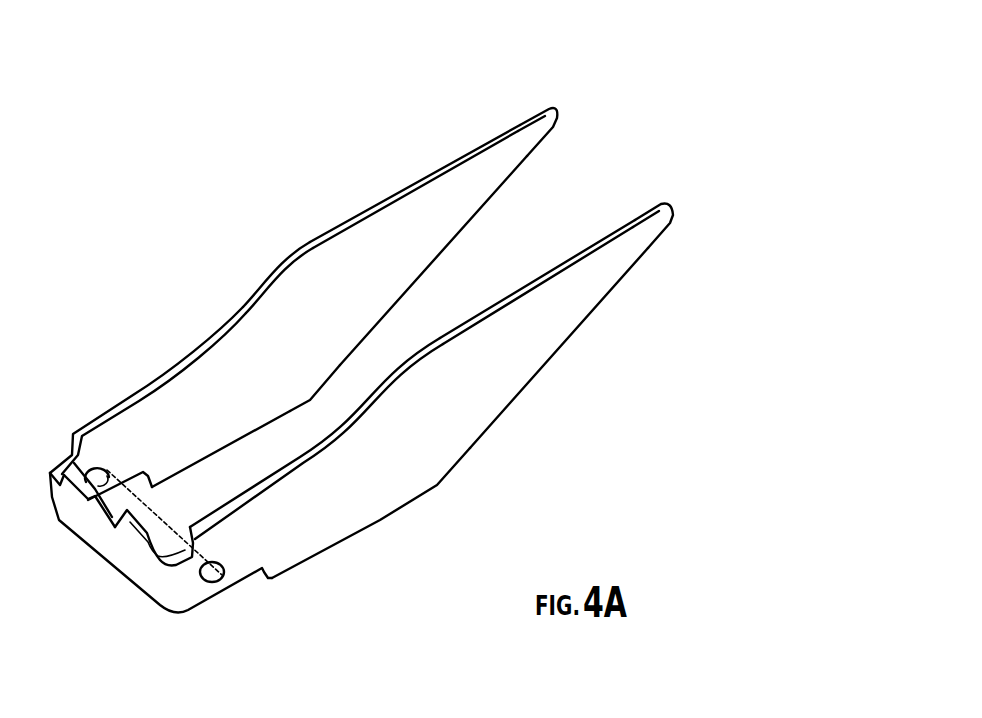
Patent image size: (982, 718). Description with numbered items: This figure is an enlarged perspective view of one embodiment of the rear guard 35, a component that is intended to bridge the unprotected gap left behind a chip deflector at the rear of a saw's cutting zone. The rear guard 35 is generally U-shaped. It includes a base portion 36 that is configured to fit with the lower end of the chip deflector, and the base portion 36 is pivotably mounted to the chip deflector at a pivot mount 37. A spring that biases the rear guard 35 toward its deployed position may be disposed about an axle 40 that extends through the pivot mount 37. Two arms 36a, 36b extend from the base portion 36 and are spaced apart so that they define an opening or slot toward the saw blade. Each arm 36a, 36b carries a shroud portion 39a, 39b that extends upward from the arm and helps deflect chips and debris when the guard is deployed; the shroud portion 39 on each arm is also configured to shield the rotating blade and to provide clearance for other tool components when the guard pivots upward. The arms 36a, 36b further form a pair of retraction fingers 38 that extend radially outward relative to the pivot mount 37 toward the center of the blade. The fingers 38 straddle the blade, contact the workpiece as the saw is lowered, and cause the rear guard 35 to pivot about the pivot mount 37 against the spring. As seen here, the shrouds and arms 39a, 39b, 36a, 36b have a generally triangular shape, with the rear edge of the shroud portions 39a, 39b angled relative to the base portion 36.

The rear guard 35 is at (393, 348).
The base portion 36 is at (303, 263).
The arm 36a is at (513, 140).
The arm 36b is at (660, 222).
The pivot mount 37 is at (207, 569).
The retraction fingers 38 is at (463, 390).
The shroud portion 39 is at (268, 283).
The shroud portion 39a is at (243, 303).
The shroud portion 39b is at (445, 442).
The axle 40 is at (170, 506).